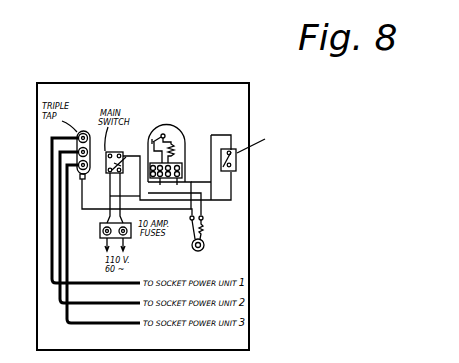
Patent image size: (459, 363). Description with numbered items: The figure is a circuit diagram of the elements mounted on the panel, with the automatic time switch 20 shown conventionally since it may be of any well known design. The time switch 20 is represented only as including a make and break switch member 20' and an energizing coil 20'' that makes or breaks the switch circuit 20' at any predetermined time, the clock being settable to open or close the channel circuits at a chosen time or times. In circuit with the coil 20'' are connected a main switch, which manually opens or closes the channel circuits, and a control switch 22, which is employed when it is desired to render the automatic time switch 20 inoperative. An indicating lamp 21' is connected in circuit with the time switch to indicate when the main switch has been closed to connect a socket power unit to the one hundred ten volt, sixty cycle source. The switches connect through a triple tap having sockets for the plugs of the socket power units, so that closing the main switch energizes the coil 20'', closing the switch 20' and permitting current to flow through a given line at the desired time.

The automatic time switch 20 is at (169, 156).
The make and break switch member 20' is at (177, 131).
The energizing coil 20'' is at (196, 133).
The indicating lamp 21' is at (162, 210).
The control switch 22 is at (233, 166).